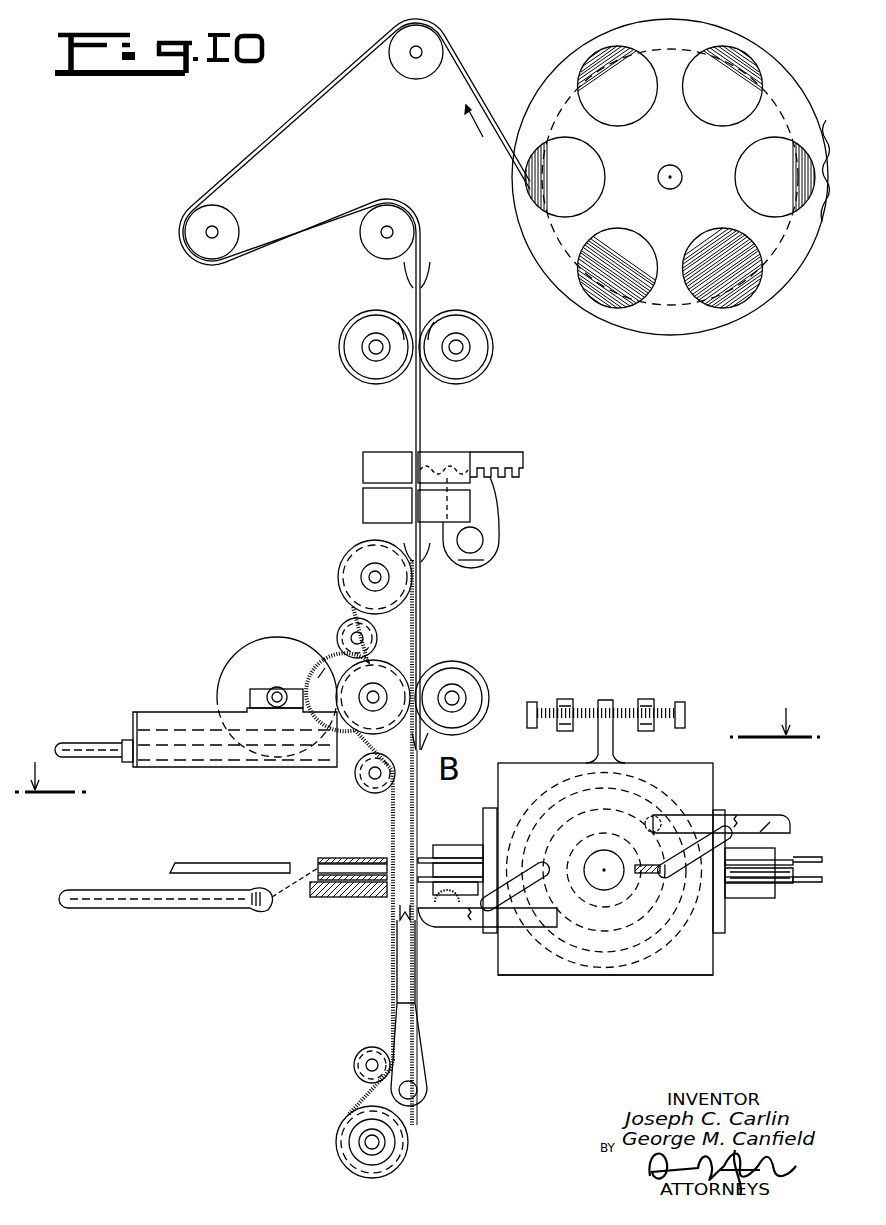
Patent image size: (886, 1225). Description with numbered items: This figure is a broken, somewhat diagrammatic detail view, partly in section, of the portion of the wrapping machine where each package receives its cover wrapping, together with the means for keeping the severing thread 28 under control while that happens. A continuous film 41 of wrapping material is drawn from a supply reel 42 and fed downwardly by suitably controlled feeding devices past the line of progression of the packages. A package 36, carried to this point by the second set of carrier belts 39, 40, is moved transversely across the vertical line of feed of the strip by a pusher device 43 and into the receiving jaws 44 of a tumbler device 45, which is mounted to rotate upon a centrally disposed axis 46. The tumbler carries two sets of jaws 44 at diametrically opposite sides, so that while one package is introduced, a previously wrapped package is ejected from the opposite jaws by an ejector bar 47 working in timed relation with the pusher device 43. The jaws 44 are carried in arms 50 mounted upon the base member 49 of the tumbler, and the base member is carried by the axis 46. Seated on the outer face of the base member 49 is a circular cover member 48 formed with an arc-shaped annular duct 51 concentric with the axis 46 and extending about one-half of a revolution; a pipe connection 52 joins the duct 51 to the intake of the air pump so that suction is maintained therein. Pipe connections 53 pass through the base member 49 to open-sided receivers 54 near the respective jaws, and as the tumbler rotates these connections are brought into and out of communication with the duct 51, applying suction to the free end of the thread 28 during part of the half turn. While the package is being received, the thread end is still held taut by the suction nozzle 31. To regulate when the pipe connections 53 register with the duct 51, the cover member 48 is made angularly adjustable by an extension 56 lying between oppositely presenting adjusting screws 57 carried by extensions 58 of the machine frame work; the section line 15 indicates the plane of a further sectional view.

The section line 15 is at (417, 737).
The severing thread 28 is at (283, 898).
The suction nozzle 31 is at (178, 906).
The package 36 is at (318, 866).
The carrier belt 39 is at (343, 858).
The carrier belt 40 is at (340, 882).
The film of wrapping material 41 is at (270, 147).
The supply reel 42 is at (710, 292).
The pusher device 43 is at (208, 862).
The receiving jaws 44 is at (428, 870).
The tumbler device 45 is at (547, 970).
The axis 46 is at (605, 880).
The ejector bar 47 is at (648, 875).
The circular cover member 48 is at (578, 775).
The base member 49 is at (512, 980).
The arms 50 is at (458, 885).
The annular duct 51 is at (555, 810).
The pipe connection 52 is at (640, 810).
The pipe connections 53 is at (540, 875).
The open-sided receiver 54 is at (478, 928).
The extension 56 is at (605, 700).
The adjusting screws 57 is at (547, 710).
The extensions of the frame work 58 is at (565, 699).